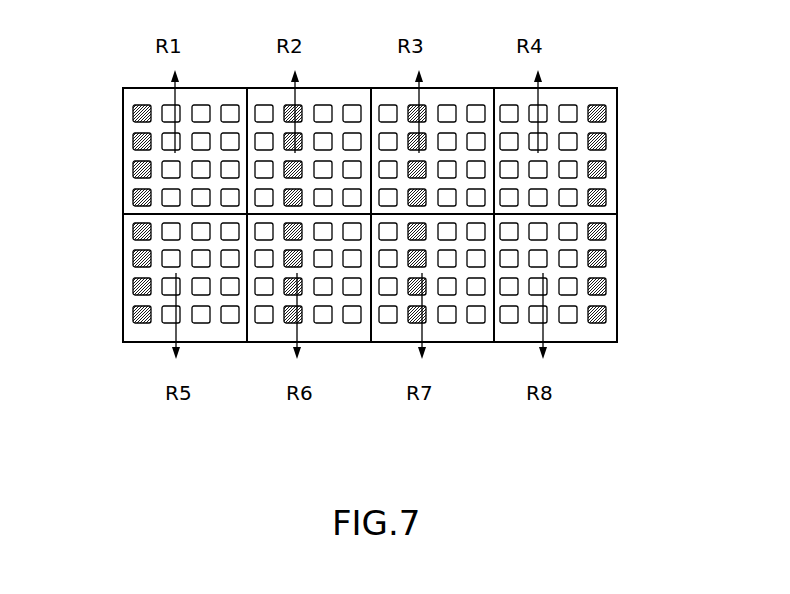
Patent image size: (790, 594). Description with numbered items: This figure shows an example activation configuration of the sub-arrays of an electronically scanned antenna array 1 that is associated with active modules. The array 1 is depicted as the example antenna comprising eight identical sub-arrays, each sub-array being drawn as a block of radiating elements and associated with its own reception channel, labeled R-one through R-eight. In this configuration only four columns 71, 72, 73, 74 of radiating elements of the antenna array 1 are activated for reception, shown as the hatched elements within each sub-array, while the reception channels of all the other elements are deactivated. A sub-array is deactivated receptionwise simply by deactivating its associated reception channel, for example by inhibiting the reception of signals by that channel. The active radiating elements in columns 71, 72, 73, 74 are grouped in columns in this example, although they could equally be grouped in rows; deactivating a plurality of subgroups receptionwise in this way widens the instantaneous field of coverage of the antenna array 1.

The antenna array 1 is at (632, 358).
The first activated column of radiating elements 71 is at (143, 106).
The second activated column of radiating elements 72 is at (294, 112).
The third activated column of radiating elements 73 is at (420, 112).
The fourth activated column of radiating elements 74 is at (598, 110).